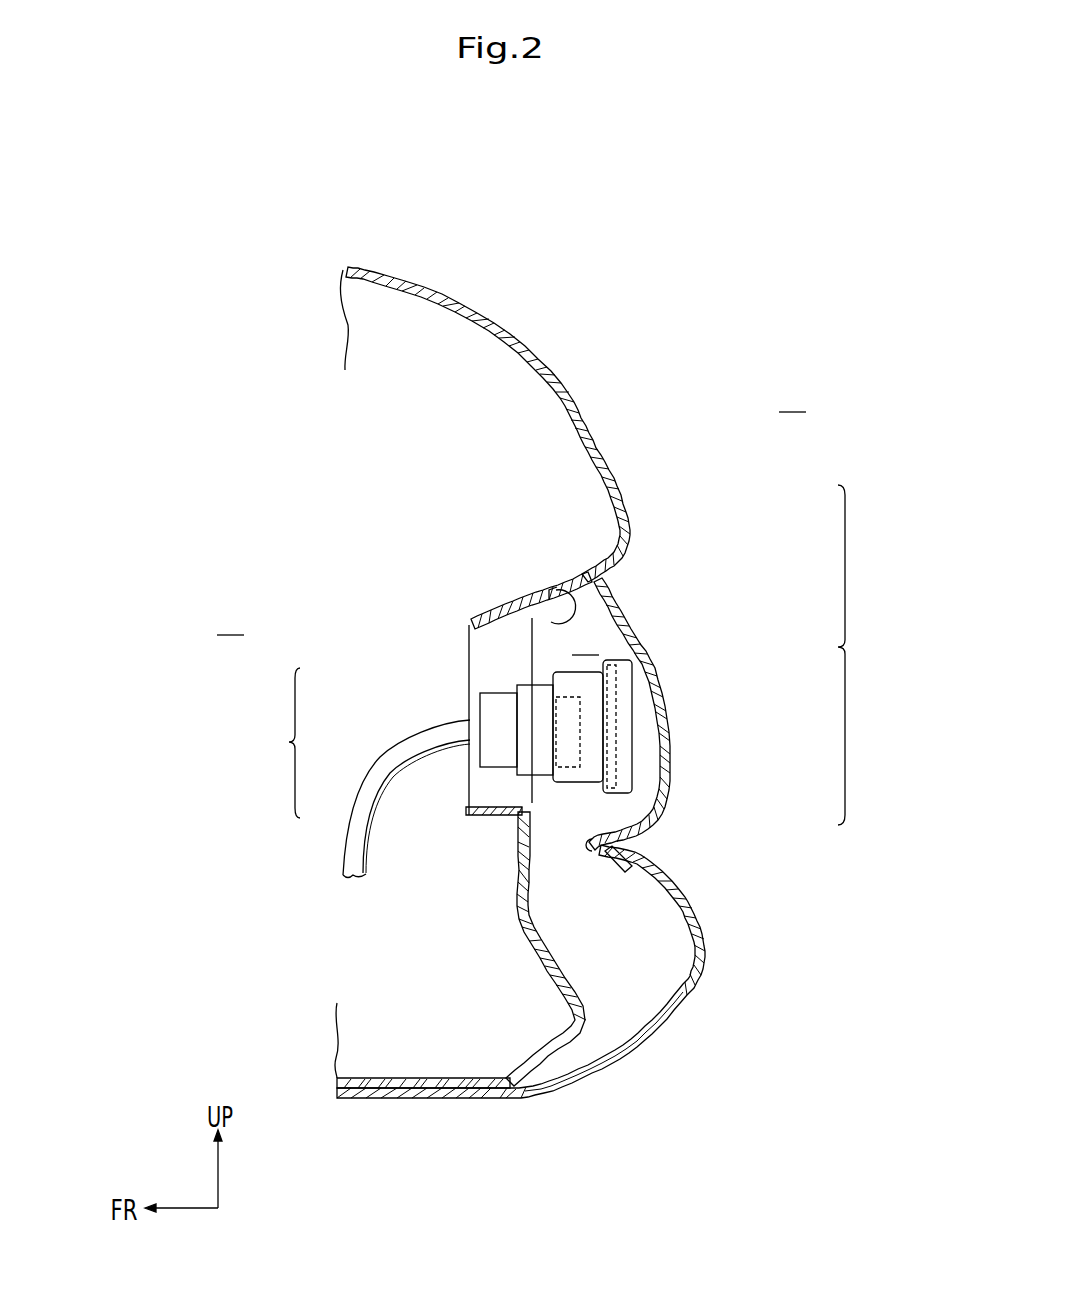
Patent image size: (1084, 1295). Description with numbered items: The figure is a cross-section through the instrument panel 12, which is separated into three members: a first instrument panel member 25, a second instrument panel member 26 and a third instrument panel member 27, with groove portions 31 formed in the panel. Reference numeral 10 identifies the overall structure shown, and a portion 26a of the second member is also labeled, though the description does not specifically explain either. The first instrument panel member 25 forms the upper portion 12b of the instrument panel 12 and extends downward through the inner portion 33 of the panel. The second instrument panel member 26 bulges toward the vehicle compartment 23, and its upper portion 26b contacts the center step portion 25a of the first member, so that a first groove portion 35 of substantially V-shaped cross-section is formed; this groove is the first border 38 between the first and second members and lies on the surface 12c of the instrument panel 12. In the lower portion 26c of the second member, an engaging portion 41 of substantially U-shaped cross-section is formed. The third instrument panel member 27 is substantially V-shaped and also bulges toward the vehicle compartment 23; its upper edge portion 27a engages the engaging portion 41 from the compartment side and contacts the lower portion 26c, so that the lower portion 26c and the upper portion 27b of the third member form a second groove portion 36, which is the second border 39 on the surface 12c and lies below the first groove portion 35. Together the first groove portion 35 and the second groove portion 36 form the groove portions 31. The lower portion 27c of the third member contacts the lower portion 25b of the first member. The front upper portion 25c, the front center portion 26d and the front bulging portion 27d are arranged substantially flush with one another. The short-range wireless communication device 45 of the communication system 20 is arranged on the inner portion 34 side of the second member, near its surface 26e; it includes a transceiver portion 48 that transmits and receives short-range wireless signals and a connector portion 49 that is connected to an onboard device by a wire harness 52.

The vehicle body side structure 10 is at (607, 188).
The instrument panel 12 is at (530, 308).
The upper portion of the instrument panel 12b is at (440, 293).
The surface of the instrument panel 12c is at (588, 420).
The communication system 20 is at (463, 670).
The vehicle compartment 23 is at (792, 397).
The first instrument panel member 25 is at (566, 380).
The center step portion 25a is at (587, 578).
The lower portion of the first instrument panel member 25b is at (488, 1078).
The front upper portion 25c is at (624, 510).
The second instrument panel member 26 is at (655, 668).
The inner panel upper flange 26a is at (538, 612).
The upper portion of the second instrument panel member 26b is at (630, 608).
The lower portion of the second instrument panel member 26c is at (625, 812).
The front center portion 26d is at (666, 720).
The surface of the second instrument panel member 26e is at (669, 773).
The third instrument panel member 27 is at (695, 1002).
The upper edge portion 27a is at (598, 860).
The upper portion of the third instrument panel member 27b is at (663, 862).
The lower portion of the third instrument panel member 27c is at (425, 1098).
The front bulging portion 27d is at (704, 938).
The groove portions 31 is at (733, 668).
The inner portion of the instrument panel 33 is at (230, 620).
The inner portion of the second instrument panel member 34 is at (585, 640).
The first groove portion 35 is at (617, 573).
The second groove portion 36 is at (633, 833).
The first border 38 is at (597, 573).
The second border 39 is at (620, 877).
The engaging portion 41 is at (608, 855).
The short-range wireless communication device 45 is at (443, 767).
The transceiver portion 48 is at (620, 740).
The connector portion 49 is at (533, 720).
The wire harness 52 is at (338, 853).